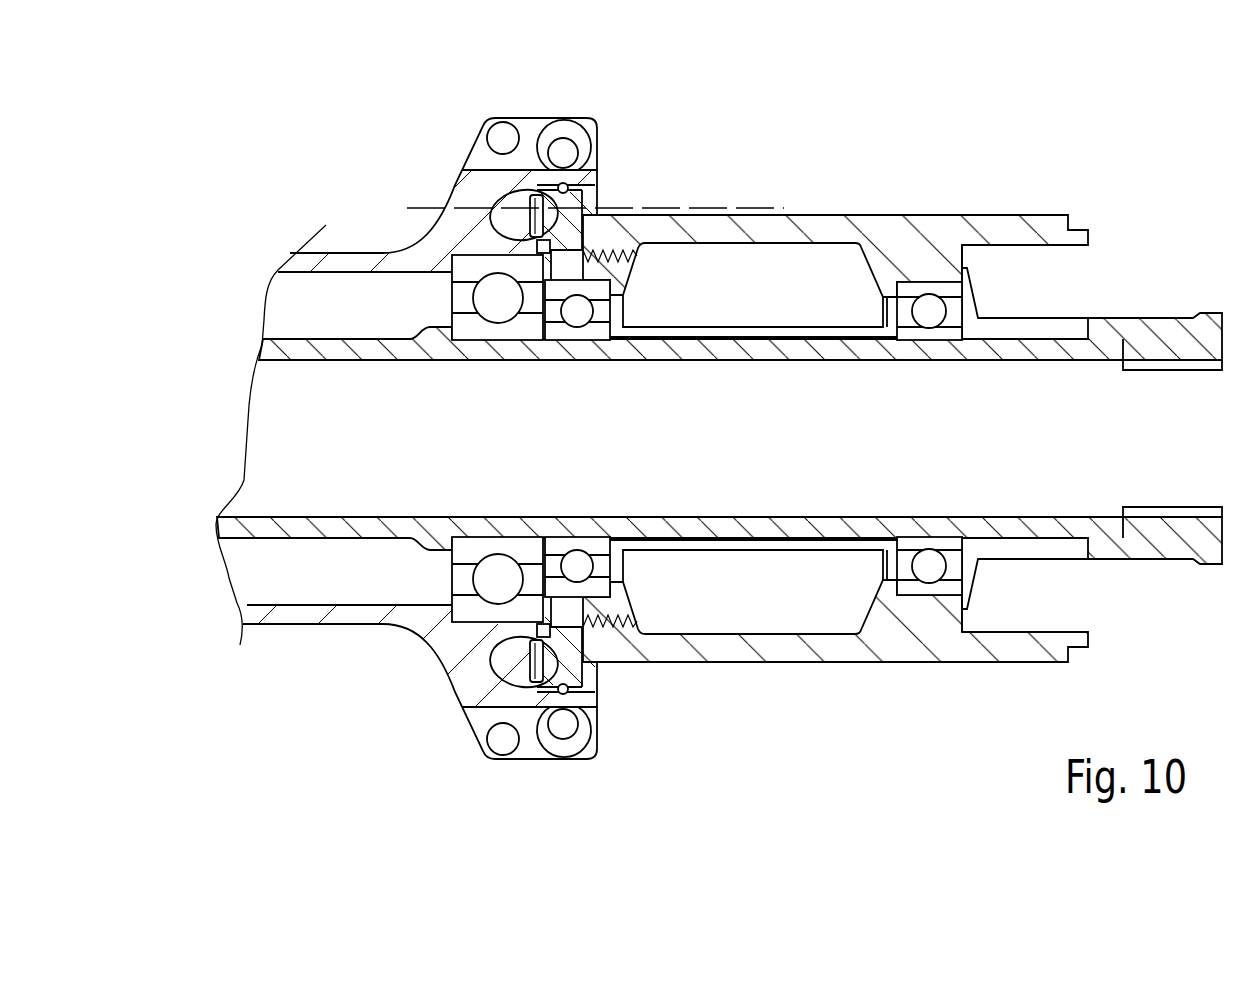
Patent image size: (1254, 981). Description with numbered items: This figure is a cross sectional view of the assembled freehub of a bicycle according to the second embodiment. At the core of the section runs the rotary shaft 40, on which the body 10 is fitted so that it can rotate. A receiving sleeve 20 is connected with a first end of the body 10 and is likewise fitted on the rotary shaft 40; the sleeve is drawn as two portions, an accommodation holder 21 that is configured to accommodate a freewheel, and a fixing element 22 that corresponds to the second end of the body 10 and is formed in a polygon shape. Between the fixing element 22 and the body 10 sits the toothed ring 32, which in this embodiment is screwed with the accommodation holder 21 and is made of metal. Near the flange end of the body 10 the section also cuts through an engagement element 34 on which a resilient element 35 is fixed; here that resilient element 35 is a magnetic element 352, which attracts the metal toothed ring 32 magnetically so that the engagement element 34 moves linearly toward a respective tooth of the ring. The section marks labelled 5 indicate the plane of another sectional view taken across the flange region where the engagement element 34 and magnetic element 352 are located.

The section line 5- 5 is at (402, 208).
The body 10 is at (266, 625).
The receiving sleeve 20 is at (810, 729).
The accommodation holder 21 is at (775, 652).
The fixing element 22 is at (604, 598).
The toothed ring 32 is at (600, 236).
The engagement element 34 is at (500, 198).
The resilient element 35 is at (505, 185).
The magnetic element 352 is at (510, 196).
The rotary shaft 40 is at (347, 548).